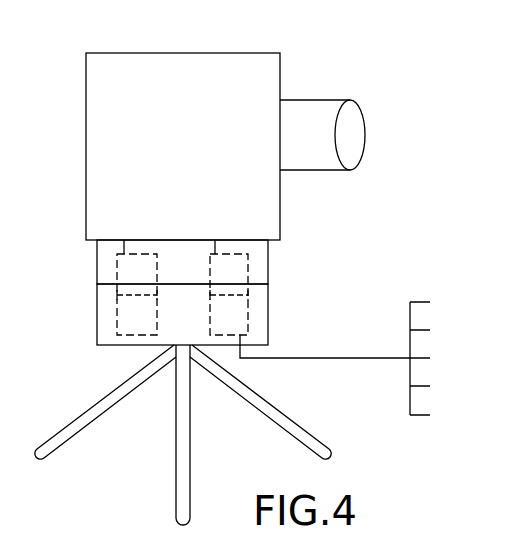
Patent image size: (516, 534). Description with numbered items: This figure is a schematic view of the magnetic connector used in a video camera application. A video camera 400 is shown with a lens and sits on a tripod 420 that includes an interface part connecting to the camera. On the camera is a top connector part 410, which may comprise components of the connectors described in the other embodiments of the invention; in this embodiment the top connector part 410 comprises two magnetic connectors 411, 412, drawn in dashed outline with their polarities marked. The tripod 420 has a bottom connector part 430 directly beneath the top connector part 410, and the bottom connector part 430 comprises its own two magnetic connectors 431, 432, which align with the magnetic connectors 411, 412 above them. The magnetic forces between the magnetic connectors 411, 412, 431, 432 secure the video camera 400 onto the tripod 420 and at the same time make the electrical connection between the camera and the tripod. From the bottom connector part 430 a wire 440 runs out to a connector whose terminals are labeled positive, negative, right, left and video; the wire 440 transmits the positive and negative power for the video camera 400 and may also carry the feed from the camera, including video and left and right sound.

The video camera 400 is at (272, 53).
The top connector part 410 is at (97, 257).
The magnetic connector 411 is at (128, 233).
The magnetic connector 412 is at (218, 233).
The tripod 420 is at (120, 388).
The bottom connector part 430 is at (97, 320).
The magnetic connector 431 is at (252, 304).
The magnetic connector 432 is at (113, 304).
The wire 440 is at (350, 360).